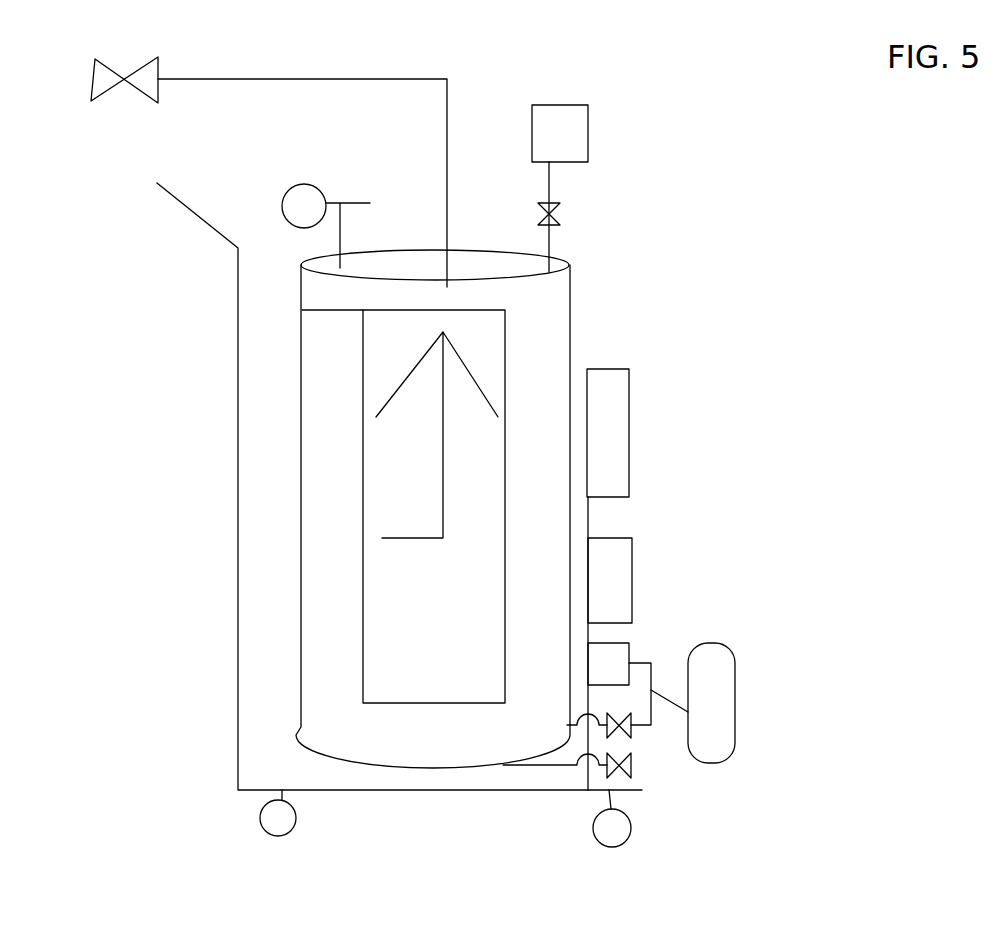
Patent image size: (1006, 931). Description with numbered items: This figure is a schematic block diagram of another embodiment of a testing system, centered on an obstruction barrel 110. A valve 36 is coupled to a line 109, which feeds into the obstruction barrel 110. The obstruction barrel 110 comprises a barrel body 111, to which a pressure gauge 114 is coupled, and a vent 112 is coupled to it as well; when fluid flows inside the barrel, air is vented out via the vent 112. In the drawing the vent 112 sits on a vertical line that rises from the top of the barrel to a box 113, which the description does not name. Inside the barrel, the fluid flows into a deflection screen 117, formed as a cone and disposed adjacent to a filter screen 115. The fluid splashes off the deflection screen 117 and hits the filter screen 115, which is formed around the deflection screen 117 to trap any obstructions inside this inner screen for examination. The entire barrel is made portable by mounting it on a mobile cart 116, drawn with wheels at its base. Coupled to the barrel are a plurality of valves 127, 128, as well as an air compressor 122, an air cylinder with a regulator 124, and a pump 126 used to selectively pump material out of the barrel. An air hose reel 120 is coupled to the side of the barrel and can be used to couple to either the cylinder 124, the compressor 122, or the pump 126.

The valve 36 is at (97, 57).
The line 109 is at (258, 79).
The obstruction barrel 110 is at (775, 258).
The barrel body 111 is at (300, 442).
The vent 112 is at (554, 219).
The control box 113 is at (588, 132).
The pressure gauge 114 is at (290, 190).
The filter screen 115 is at (363, 578).
The mobile cart 116 is at (238, 663).
The deflection screen 117 is at (462, 355).
The air hose reel 120 is at (629, 440).
The air compressor 122 is at (632, 578).
The air cylinder with a regulator 124 is at (735, 665).
The pump 126 is at (629, 643).
The valve 127 is at (626, 738).
The valve 128 is at (626, 777).